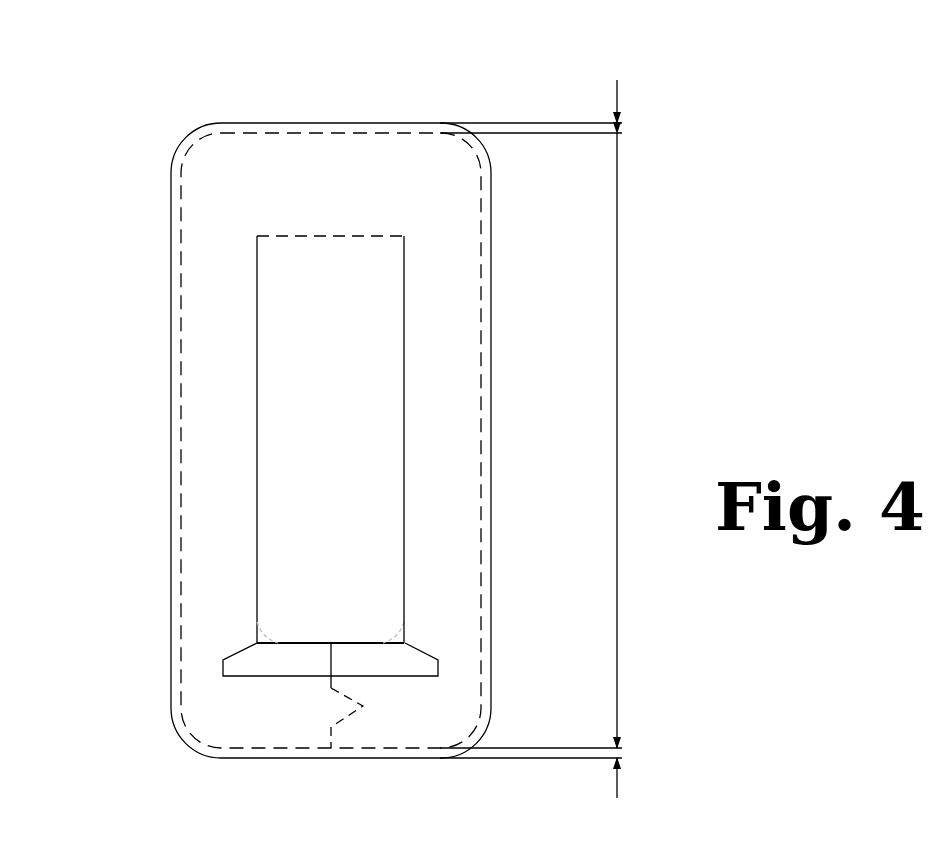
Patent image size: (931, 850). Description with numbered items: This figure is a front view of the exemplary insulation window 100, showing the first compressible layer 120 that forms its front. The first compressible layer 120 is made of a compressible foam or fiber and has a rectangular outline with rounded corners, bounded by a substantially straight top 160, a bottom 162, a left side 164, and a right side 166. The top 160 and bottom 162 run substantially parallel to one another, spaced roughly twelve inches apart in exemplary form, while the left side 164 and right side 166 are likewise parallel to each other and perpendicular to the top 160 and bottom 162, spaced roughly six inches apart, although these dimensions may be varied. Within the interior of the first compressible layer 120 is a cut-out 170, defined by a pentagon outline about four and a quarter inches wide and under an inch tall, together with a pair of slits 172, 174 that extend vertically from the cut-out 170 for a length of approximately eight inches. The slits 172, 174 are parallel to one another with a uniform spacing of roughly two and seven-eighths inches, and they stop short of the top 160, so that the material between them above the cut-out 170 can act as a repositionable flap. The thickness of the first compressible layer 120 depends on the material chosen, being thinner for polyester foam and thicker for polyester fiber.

The insulation window 100 is at (86, 175).
The first compressible layer 120 is at (196, 711).
The top 160 is at (346, 123).
The bottom 162 is at (345, 758).
The left side 164 is at (492, 365).
The right side 166 is at (170, 549).
The cut-out 170 is at (262, 676).
The slit 172 is at (257, 540).
The slit 174 is at (404, 380).